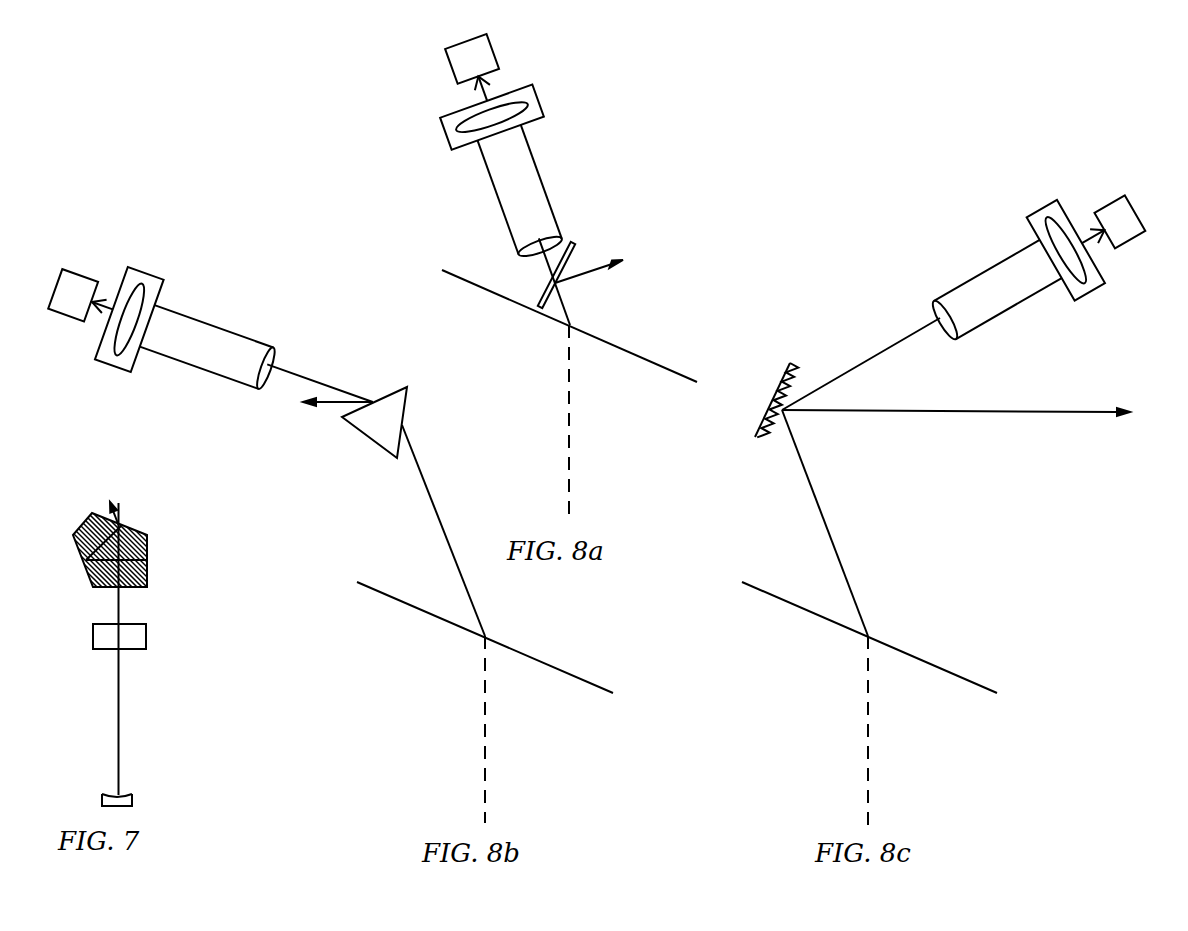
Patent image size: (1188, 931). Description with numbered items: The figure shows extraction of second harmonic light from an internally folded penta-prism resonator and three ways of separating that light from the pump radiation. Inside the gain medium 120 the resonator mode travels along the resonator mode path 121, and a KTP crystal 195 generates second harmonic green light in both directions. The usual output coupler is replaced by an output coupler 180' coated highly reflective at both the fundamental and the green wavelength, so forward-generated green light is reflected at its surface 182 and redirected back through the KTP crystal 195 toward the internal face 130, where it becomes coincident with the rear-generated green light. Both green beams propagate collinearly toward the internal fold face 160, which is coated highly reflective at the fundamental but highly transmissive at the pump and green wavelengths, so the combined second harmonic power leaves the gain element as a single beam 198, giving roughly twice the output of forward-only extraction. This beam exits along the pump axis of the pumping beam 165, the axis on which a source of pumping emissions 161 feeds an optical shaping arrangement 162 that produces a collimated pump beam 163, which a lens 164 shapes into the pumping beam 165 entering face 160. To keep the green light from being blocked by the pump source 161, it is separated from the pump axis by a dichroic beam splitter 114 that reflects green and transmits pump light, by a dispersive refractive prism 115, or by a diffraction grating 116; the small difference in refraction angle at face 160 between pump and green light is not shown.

In FIG. 8A, the dichroic beam splitter 114 is at (575, 242).
In FIG. 7, the refractive prism 115 is at (410, 403).
In FIG. 8C, the diffraction grating 116 is at (783, 365).
In FIG. 7, the gain medium 120 is at (151, 576).
In FIG. 8A, the resonator mode path 121 is at (572, 456).
In FIG. 8B, the resonator mode path 121 is at (488, 806).
In FIG. 8C, the resonator mode path 121 is at (872, 806).
In FIG. 7, the internal face 130 is at (135, 588).
In FIG. 7, the internal fold face 160 is at (144, 540).
In FIG. 8A, the internal fold face 160 is at (689, 374).
In FIG. 8B, the internal fold face 160 is at (597, 690).
In FIG. 8C, the internal fold face 160 is at (980, 690).
In FIG. 7, the source of pumping emissions 161 is at (58, 323).
In FIG. 8A, the source of pumping emissions 161 is at (445, 58).
In FIG. 8C, the source of pumping emissions 161 is at (1138, 242).
In FIG. 7, the optical shaping arrangement 162 is at (108, 363).
In FIG. 8A, the optical shaping arrangement 162 is at (438, 126).
In FIG. 8C, the optical shaping arrangement 162 is at (1092, 298).
In FIG. 7, the collimated pump beam 163 is at (183, 360).
In FIG. 8A, the collimated pump beam 163 is at (492, 180).
In FIG. 8C, the collimated pump beam 163 is at (1010, 315).
In FIG. 7, the lens 164 is at (260, 387).
In FIG. 8A, the lens 164 is at (523, 255).
In FIG. 8C, the lens 164 is at (933, 308).
In FIG. 7, the pumping beam 165 is at (321, 386).
In FIG. 8A, the pumping beam 165 is at (548, 270).
In FIG. 8C, the pumping beam 165 is at (878, 356).
In FIG. 7, the output coupler 180' is at (143, 798).
In FIG. 7, the surface 182 is at (122, 793).
In FIG. 7, the KTP crystal 195 is at (148, 637).
In FIG. 7, the single beam 198 is at (231, 460).
In FIG. 8A, the single beam 198 is at (606, 266).
In FIG. 8C, the single beam 198 is at (974, 413).